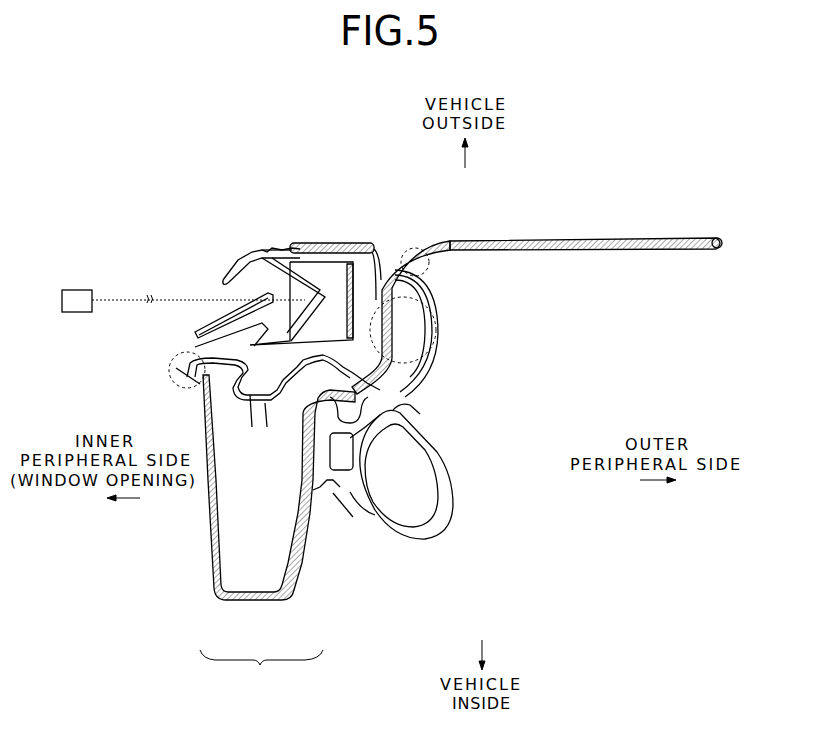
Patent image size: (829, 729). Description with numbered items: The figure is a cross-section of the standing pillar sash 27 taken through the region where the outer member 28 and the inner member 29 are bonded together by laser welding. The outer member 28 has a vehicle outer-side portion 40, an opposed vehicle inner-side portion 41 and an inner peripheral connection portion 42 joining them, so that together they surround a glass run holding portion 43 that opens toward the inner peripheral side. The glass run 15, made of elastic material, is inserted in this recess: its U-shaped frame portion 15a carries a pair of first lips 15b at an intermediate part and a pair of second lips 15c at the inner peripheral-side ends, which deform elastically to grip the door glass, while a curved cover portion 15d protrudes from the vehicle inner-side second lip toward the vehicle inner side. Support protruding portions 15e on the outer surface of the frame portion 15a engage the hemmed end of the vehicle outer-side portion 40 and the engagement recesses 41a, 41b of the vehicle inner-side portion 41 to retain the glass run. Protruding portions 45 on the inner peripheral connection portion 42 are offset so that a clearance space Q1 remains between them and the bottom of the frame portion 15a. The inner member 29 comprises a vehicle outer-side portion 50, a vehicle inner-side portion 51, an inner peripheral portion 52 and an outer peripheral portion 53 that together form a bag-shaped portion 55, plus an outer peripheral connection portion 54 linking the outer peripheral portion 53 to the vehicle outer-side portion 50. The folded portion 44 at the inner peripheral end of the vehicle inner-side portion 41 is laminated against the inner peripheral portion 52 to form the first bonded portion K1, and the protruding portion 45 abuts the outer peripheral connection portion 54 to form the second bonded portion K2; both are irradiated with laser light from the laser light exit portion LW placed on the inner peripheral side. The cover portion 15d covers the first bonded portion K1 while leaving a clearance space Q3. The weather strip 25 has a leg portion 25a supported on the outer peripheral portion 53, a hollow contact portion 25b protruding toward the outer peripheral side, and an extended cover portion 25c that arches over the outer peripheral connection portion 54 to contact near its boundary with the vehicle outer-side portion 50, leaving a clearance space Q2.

The glass run 15 is at (240, 246).
The frame portion 15a is at (268, 248).
The first lips 15b is at (318, 244).
The second lips 15c is at (228, 268).
The cover portion 15d is at (188, 392).
The support protruding portions 15e is at (363, 243).
The weather strip 25 is at (440, 447).
The leg portion 25a is at (344, 505).
The hollow contact portion 25b is at (452, 484).
The extended cover portion 25c is at (418, 300).
The standing pillar sash 27 is at (598, 182).
The outer member 28 is at (378, 237).
The inner member 29 is at (670, 237).
The vehicle outer-side portion 40 is at (325, 243).
The vehicle inner-side portion 41 is at (303, 455).
The engagement recess 41a is at (247, 430).
The engagement recess 41b is at (412, 408).
The inner peripheral connection portion 42 is at (400, 360).
The glass run holding portion 43 is at (340, 284).
The folded portion 44 is at (221, 394).
The protruding portions 45 is at (402, 322).
The vehicle outer-side portion 50 is at (538, 240).
The vehicle inner-side portion 51 is at (260, 600).
The inner peripheral portion 52 is at (213, 527).
The outer peripheral portion 53 is at (313, 520).
The outer peripheral connection portion 54 is at (400, 347).
The bag-shaped portion 55 is at (261, 674).
The first bonded portion K1 is at (200, 386).
The second bonded portion K2 is at (402, 298).
The clearance space Q1 is at (420, 250).
The clearance space Q2 is at (402, 333).
The clearance space Q3 is at (183, 366).
The laser light exit portion LW is at (85, 290).